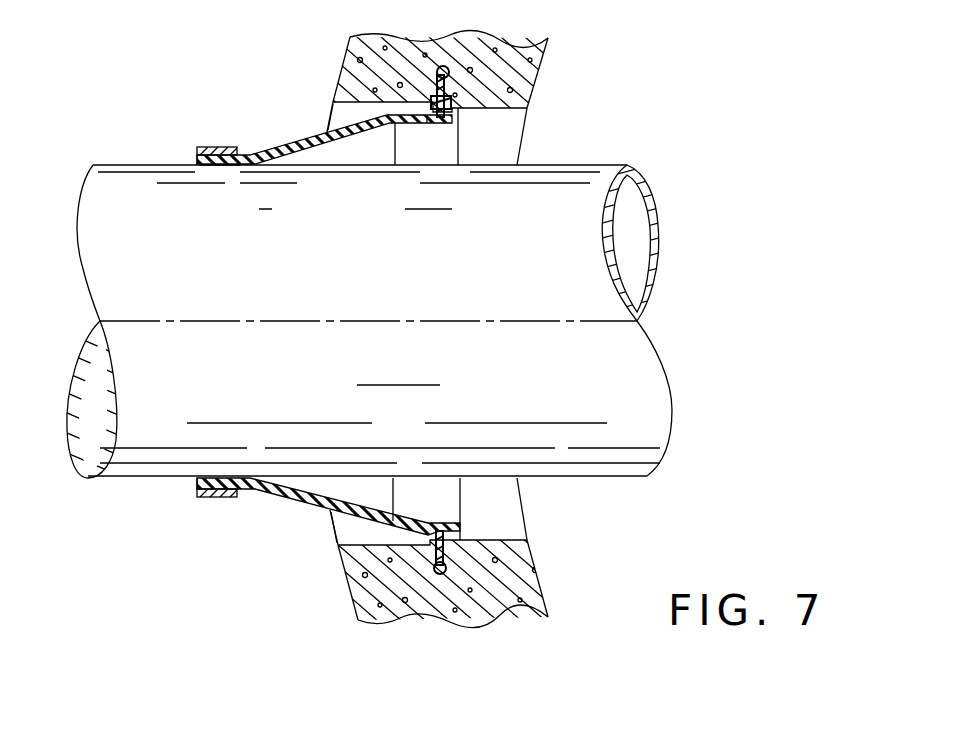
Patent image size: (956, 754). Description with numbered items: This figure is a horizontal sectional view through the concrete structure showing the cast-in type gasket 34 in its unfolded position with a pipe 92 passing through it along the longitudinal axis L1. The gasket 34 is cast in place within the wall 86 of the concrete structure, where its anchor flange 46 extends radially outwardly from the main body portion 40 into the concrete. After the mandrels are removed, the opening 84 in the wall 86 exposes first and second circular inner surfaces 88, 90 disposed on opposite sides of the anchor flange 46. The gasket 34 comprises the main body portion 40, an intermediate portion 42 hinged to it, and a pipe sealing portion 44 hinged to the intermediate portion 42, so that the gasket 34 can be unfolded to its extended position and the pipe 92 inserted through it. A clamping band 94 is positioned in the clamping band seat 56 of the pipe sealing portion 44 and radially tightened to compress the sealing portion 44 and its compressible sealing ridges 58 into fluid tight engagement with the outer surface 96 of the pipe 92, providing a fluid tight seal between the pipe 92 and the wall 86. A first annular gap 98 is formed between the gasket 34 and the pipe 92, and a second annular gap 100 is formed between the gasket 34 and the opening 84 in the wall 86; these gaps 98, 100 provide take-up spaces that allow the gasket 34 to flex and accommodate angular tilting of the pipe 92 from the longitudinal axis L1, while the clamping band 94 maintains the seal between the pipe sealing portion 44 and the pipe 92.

The cast-in type gasket 34 is at (298, 122).
The main body portion 40 is at (438, 123).
The intermediate portion 42 is at (312, 150).
The pipe sealing portion 44 is at (197, 160).
The anchor flange 46 is at (441, 65).
The clamping band seat 56 is at (147, 307).
The compressible sealing ridges 58 is at (217, 166).
The opening 84 is at (380, 92).
The wall 86 is at (530, 40).
The first circular inner surface 88 is at (333, 103).
The second circular inner surface 90 is at (523, 108).
The pipe 92 is at (650, 180).
The clamping band 94 is at (217, 147).
The outer surface 96 is at (265, 253).
The first annular space or gap 98 is at (440, 148).
The second annular space or gap 100 is at (338, 120).
The longitudinal axis L1 is at (374, 324).